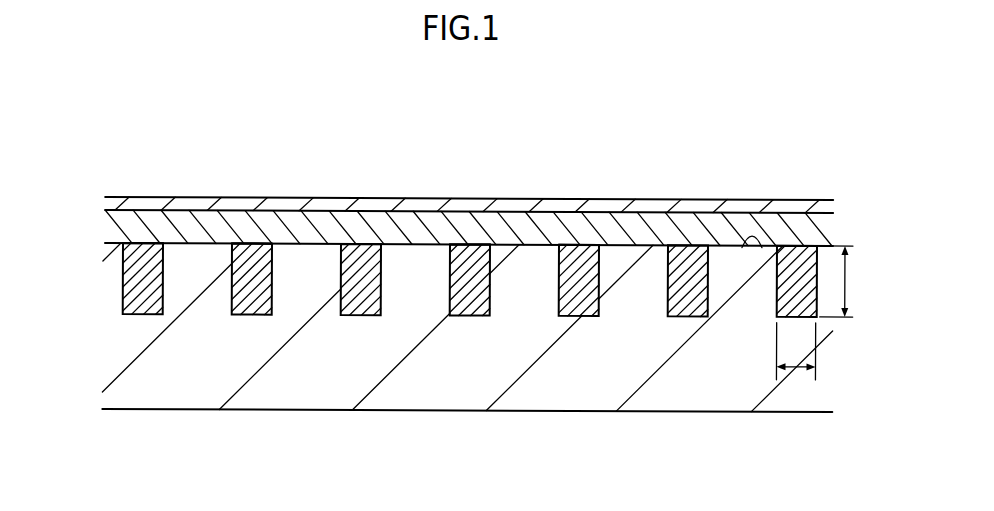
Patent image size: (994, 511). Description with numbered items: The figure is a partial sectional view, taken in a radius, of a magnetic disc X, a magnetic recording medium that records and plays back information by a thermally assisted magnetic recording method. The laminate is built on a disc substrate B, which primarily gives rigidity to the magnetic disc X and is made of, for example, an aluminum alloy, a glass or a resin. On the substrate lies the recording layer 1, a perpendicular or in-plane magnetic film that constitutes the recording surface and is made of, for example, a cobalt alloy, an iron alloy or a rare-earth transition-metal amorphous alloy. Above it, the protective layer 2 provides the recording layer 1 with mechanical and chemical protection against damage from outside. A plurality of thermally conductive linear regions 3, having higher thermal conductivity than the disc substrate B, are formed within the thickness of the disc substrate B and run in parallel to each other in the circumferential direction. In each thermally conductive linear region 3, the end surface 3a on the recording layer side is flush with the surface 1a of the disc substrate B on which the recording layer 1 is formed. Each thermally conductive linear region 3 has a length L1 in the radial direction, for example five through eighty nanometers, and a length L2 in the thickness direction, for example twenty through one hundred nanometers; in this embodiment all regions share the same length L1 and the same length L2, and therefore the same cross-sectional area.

The magnetic disc X is at (111, 170).
The recording layer 1 is at (822, 222).
The surface of the disc substrate 1a is at (743, 247).
The protective layer 2 is at (636, 207).
The thermally conductive linear region 3 is at (137, 278).
The end surface 3a is at (257, 243).
The disc substrate B is at (222, 393).
The length L1 is at (792, 367).
The length L2 is at (851, 281).